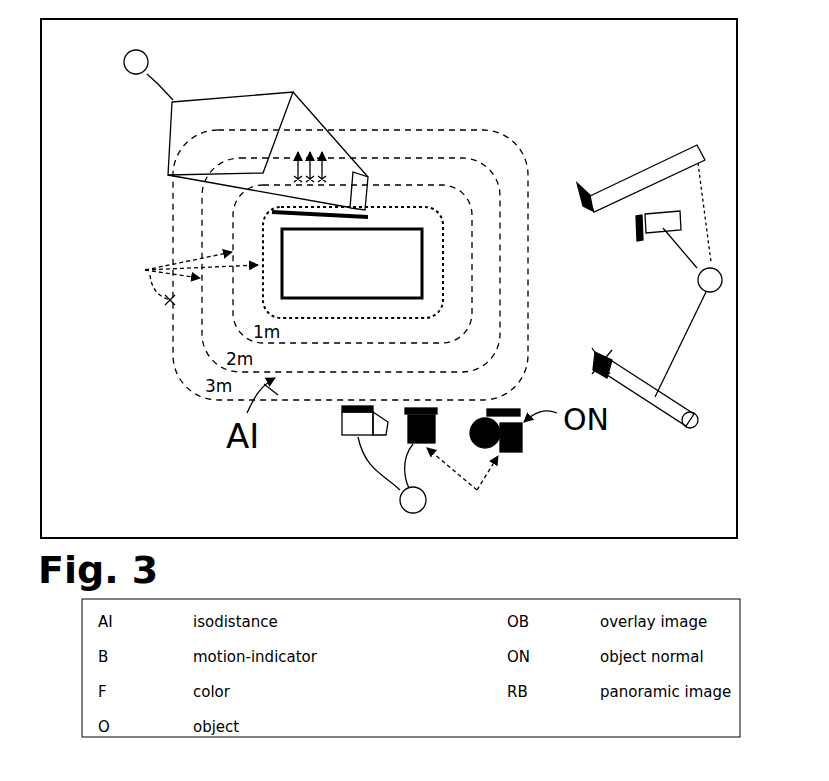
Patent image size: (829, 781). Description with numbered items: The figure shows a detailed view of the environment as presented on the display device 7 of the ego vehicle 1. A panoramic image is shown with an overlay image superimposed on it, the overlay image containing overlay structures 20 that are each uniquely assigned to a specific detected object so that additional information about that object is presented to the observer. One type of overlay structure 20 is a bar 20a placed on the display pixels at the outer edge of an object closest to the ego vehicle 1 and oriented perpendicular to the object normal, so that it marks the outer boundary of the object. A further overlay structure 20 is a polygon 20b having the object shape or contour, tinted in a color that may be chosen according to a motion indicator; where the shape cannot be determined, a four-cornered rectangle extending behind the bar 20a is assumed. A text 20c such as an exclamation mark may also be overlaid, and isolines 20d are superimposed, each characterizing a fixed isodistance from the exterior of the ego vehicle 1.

The display device 7 is at (708, 68).
The ego vehicle 1 is at (354, 281).
The bar 20a is at (512, 403).
The polygon 20b is at (482, 490).
The text 20c is at (313, 148).
The isolines 20d is at (165, 278).
The overlay structure 20 is at (533, 438).